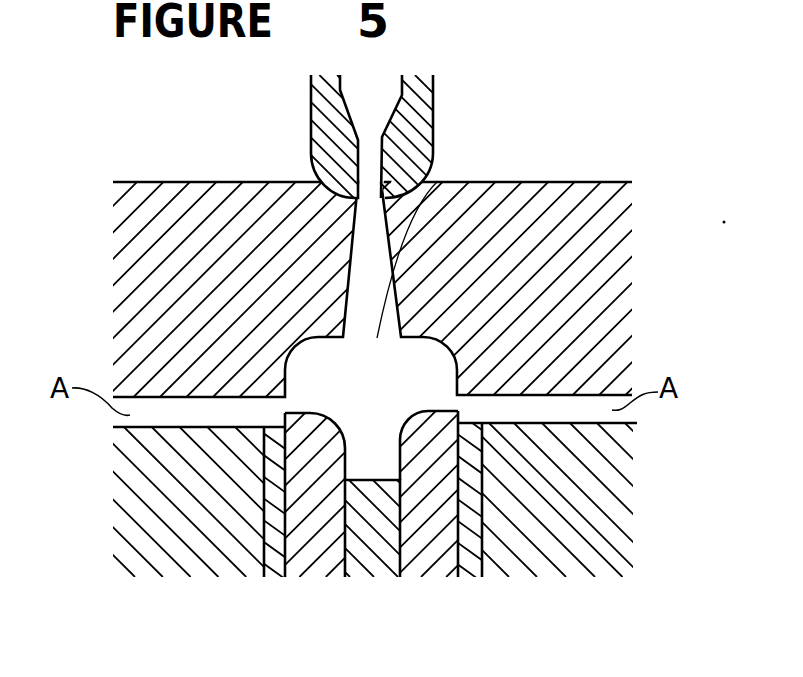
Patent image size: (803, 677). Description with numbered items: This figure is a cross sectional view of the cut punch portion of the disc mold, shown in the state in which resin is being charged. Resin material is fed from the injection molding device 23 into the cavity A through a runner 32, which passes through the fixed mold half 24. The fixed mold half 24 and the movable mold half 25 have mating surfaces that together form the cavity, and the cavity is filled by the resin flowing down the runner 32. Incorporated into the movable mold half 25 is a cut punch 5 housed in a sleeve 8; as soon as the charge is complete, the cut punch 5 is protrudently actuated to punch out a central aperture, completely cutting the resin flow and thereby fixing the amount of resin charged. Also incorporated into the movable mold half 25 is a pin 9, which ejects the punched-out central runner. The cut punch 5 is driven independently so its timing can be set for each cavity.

The cut punch 5 is at (427, 540).
The sleeve 8 is at (468, 543).
The runner ejection pin 9 is at (368, 540).
The injection molding device 23 is at (413, 106).
The fixed mold half 24 is at (588, 300).
The movable mold half 25 is at (590, 513).
The runner 32 is at (438, 181).